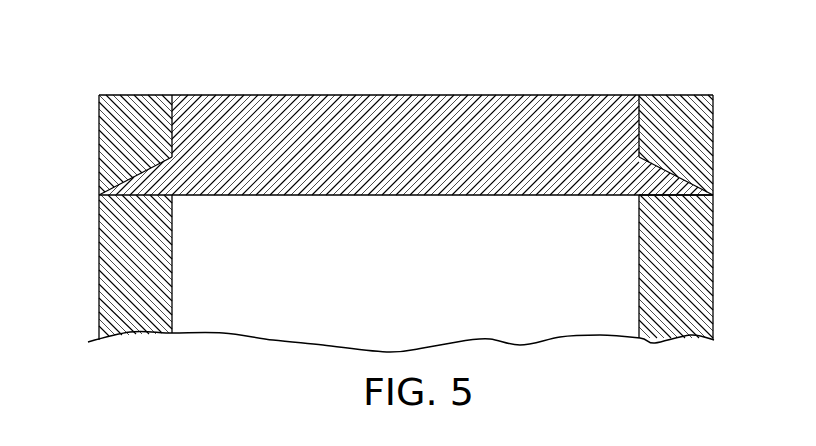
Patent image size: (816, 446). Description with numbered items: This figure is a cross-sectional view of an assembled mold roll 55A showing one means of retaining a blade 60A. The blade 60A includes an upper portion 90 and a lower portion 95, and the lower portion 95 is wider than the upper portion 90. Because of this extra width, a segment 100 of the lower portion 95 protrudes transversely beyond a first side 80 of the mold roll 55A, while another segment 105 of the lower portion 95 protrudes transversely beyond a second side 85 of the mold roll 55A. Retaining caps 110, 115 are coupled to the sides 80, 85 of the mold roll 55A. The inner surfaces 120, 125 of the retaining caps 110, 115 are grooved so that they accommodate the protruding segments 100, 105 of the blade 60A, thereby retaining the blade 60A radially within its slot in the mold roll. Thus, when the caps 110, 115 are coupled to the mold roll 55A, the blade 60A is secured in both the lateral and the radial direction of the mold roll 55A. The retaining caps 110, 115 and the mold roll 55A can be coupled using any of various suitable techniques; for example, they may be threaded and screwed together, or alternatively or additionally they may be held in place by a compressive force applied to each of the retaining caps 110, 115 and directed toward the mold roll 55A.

The mold roll 55A is at (213, 310).
The blade 60A is at (478, 113).
The first side 80 is at (172, 262).
The second side 85 is at (639, 275).
The upper portion 90 is at (615, 102).
The lower portion 95 is at (662, 180).
The segment 100 is at (100, 164).
The segment 105 is at (712, 193).
The retaining cap 110 is at (120, 227).
The retaining cap 115 is at (705, 322).
The inner surface 120 is at (152, 142).
The inner surface 125 is at (648, 178).